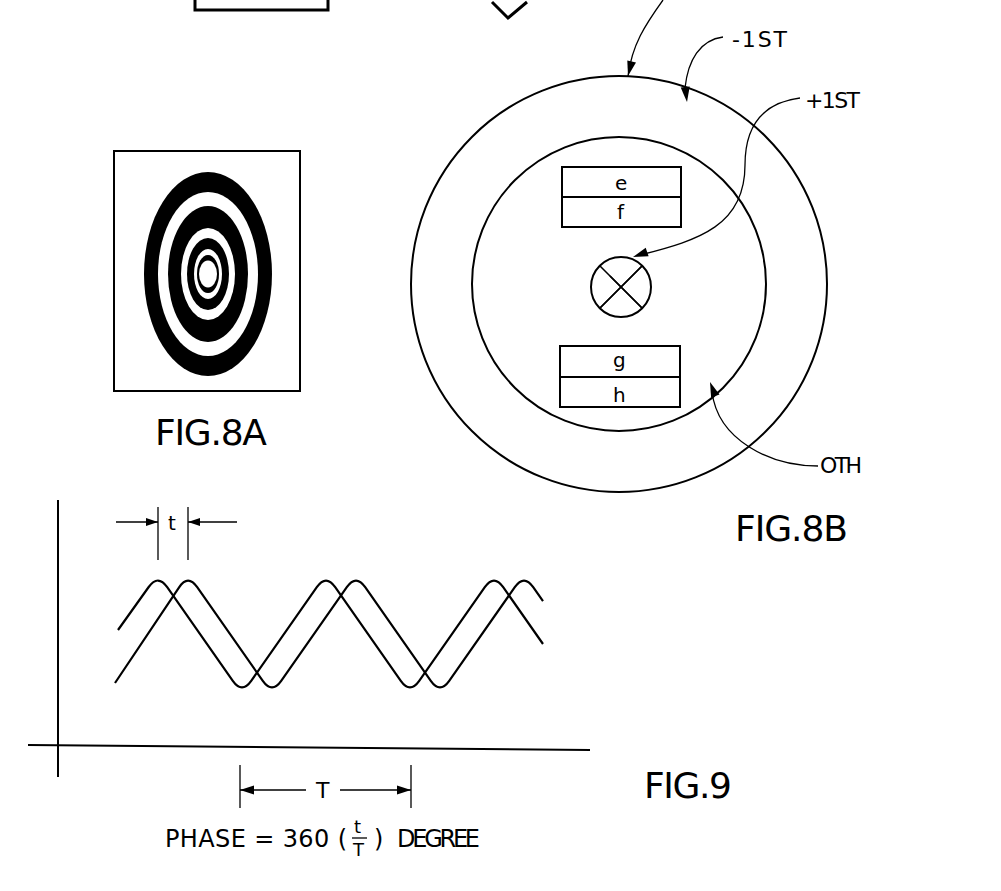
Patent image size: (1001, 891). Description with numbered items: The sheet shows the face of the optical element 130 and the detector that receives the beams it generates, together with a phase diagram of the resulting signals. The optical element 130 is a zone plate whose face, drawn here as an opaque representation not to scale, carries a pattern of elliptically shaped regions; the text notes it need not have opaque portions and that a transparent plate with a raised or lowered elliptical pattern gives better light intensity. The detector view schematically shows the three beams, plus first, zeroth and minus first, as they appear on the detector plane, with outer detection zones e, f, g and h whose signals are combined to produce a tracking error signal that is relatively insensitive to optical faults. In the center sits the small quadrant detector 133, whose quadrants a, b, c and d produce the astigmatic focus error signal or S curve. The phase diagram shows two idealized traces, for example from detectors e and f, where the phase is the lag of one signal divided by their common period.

In FIG. 8A, the optical element 130 is at (168, 151).
In FIG. 8B, the quadrant detector 133 is at (600, 305).
In FIG. 8B, the detector quadrant a is at (643, 288).
In FIG. 8B, the detector quadrant b is at (620, 263).
In FIG. 8B, the detector quadrant c is at (600, 285).
In FIG. 8B, the detector quadrant d is at (627, 308).